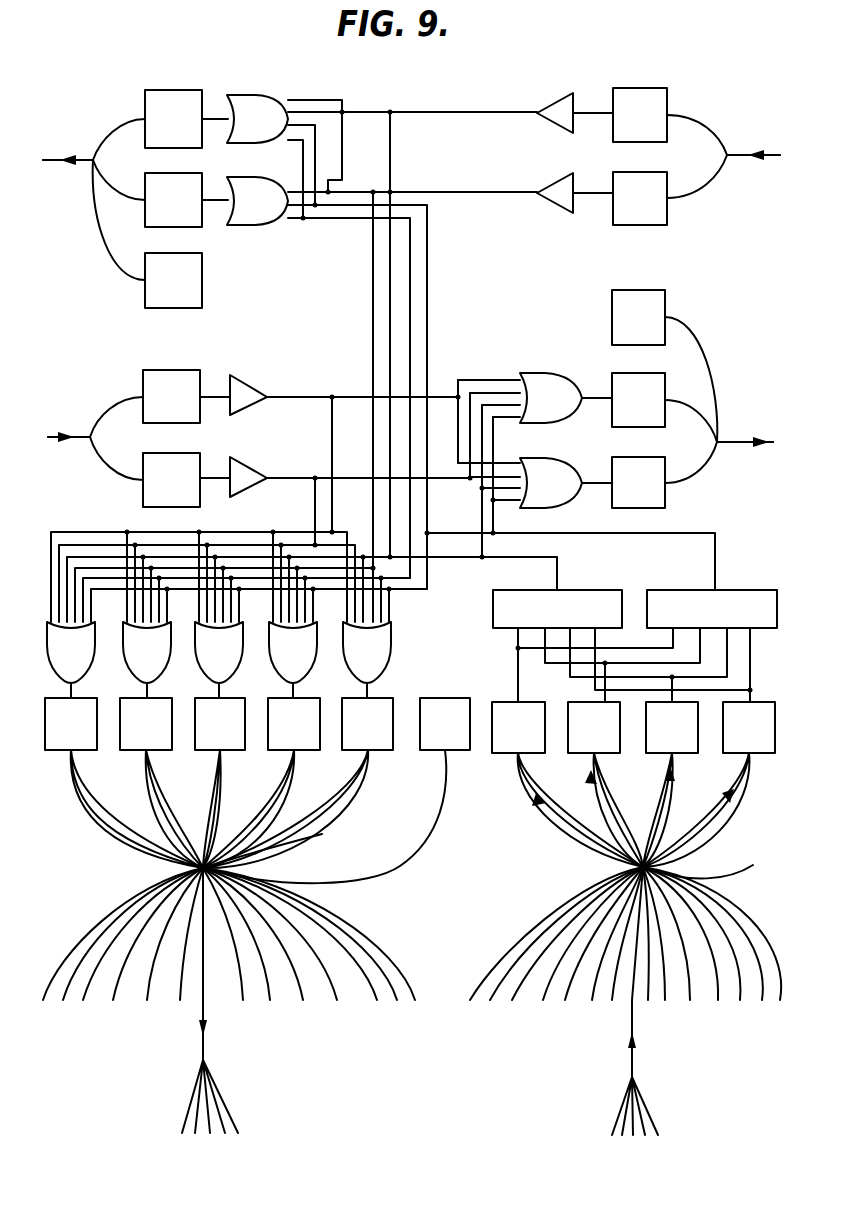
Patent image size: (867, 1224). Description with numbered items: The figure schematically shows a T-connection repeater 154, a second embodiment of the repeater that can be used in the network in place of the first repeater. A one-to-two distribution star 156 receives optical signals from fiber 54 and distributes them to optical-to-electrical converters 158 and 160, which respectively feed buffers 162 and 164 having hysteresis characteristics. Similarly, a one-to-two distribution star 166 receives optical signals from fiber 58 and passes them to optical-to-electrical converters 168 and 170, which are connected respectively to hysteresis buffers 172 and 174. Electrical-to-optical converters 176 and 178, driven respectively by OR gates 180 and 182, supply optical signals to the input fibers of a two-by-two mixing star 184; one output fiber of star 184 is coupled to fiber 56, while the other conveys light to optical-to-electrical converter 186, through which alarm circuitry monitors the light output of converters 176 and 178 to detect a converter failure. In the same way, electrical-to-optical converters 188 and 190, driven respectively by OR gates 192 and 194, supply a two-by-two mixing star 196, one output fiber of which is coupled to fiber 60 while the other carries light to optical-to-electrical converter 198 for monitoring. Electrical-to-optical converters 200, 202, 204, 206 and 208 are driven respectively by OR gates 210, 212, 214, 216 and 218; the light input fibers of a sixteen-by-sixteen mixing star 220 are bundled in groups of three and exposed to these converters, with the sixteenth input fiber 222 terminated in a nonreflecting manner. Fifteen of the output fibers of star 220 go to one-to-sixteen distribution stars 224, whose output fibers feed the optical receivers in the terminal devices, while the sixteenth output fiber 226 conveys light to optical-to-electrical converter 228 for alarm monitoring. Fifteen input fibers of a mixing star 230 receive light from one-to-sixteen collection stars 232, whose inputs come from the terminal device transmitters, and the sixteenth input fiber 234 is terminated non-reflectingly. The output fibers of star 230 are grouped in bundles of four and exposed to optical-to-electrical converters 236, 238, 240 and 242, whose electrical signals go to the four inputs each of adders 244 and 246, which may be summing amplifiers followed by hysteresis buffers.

The fiber 54 is at (770, 154).
The fiber 56 is at (48, 163).
The fiber 58 is at (48, 440).
The fiber 60 is at (770, 441).
The T-connection repeater 154 is at (703, 58).
The 1-to-2 distribution star 156 is at (731, 182).
The optical-to-electrical converter 158 is at (610, 88).
The optical-to-electrical converter 160 is at (613, 224).
The buffer 162 is at (545, 121).
The buffer 164 is at (550, 180).
The 1-to-2 distribution star 166 is at (82, 415).
The optical-to-electrical converter 168 is at (175, 370).
The optical-to-electrical converter 170 is at (153, 453).
The buffer 172 is at (243, 386).
The buffer 174 is at (243, 466).
The electrical-to-optical converter 176 is at (168, 90).
The electrical-to-optical converter 178 is at (147, 214).
The OR gate 180 is at (270, 97).
The OR gate 182 is at (252, 226).
The 2-to-2 mixing star 184 is at (82, 140).
The optical-to-electrical converter 186 is at (202, 285).
The electrical-to-optical converter 188 is at (612, 375).
The electrical-to-optical converter 190 is at (612, 456).
The OR gate 192 is at (532, 377).
The OR gate 194 is at (537, 461).
The 2-to-2 mixing star 196 is at (734, 458).
The optical-to-electrical converter 198 is at (612, 305).
The electrical-to-optical converter 200 is at (82, 752).
The electrical-to-optical converter 202 is at (155, 699).
The electrical-to-optical converter 204 is at (200, 752).
The electrical-to-optical converter 206 is at (272, 752).
The electrical-to-optical converter 208 is at (345, 752).
The OR gate 210 is at (78, 663).
The OR gate 212 is at (128, 638).
The OR gate 214 is at (200, 638).
The OR gate 216 is at (285, 665).
The OR gate 218 is at (355, 662).
The 16-to-16 mixing star 220 is at (150, 868).
The sixteenth input fiber 222 is at (306, 844).
The 1-to-16 distribution stars 224 is at (238, 1049).
The sixteenth output fiber 226 is at (372, 883).
The optical-to-electrical converter 228 is at (436, 752).
The mixing star 230 is at (585, 869).
The 1-to-16 collection stars 232 is at (585, 1066).
The sixteenth input fiber 234 is at (728, 879).
The optical-to-electrical converter 236 is at (527, 754).
The optical-to-electrical converter 238 is at (606, 754).
The optical-to-electrical converter 240 is at (683, 754).
The optical-to-electrical converter 242 is at (775, 754).
The adder 244 is at (493, 612).
The adder 246 is at (680, 590).